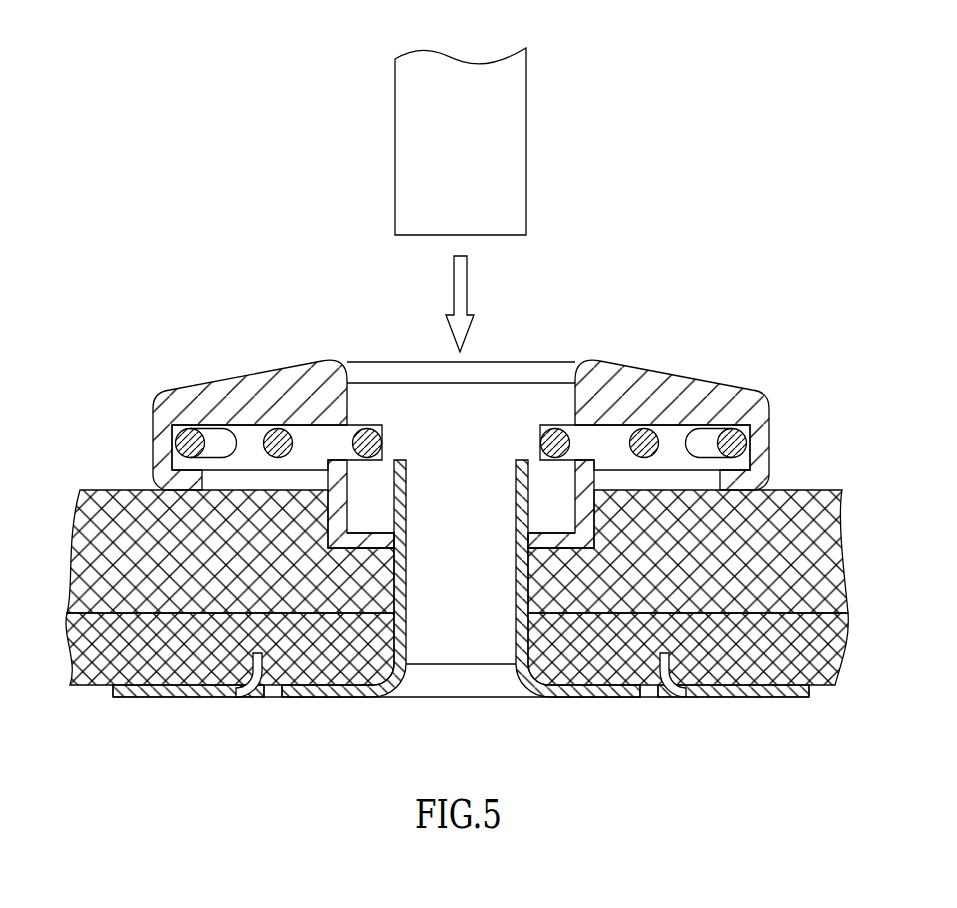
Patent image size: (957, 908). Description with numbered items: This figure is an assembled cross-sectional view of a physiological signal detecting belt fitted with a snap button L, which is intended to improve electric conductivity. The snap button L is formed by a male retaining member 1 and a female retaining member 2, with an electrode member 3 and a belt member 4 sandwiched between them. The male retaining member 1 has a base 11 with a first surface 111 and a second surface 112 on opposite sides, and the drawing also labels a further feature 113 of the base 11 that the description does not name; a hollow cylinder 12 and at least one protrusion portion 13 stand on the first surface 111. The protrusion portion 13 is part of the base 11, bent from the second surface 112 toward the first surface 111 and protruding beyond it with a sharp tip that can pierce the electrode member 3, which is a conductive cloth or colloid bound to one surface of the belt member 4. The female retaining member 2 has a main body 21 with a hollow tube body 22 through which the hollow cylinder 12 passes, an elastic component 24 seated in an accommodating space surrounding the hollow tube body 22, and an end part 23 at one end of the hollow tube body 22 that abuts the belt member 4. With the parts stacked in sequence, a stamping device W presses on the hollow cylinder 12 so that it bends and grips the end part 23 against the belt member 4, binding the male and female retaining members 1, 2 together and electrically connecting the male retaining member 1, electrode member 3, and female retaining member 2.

The male retaining member 1 is at (437, 601).
The base 11 is at (437, 705).
The first surface 111 is at (147, 682).
The second surface 112 is at (173, 697).
The through hole 113 is at (439, 724).
The hollow cylinder 12 is at (407, 473).
The protrusion portion 13 is at (264, 657).
The female retaining member 2 is at (475, 435).
The main body 21 is at (770, 440).
The hollow tube body 22 is at (587, 483).
The end part 23 is at (555, 537).
The elastic component 24 is at (275, 439).
The electrode member 3 is at (822, 685).
The belt member 4 is at (797, 490).
The snap button L is at (475, 417).
The stamping device W is at (526, 172).